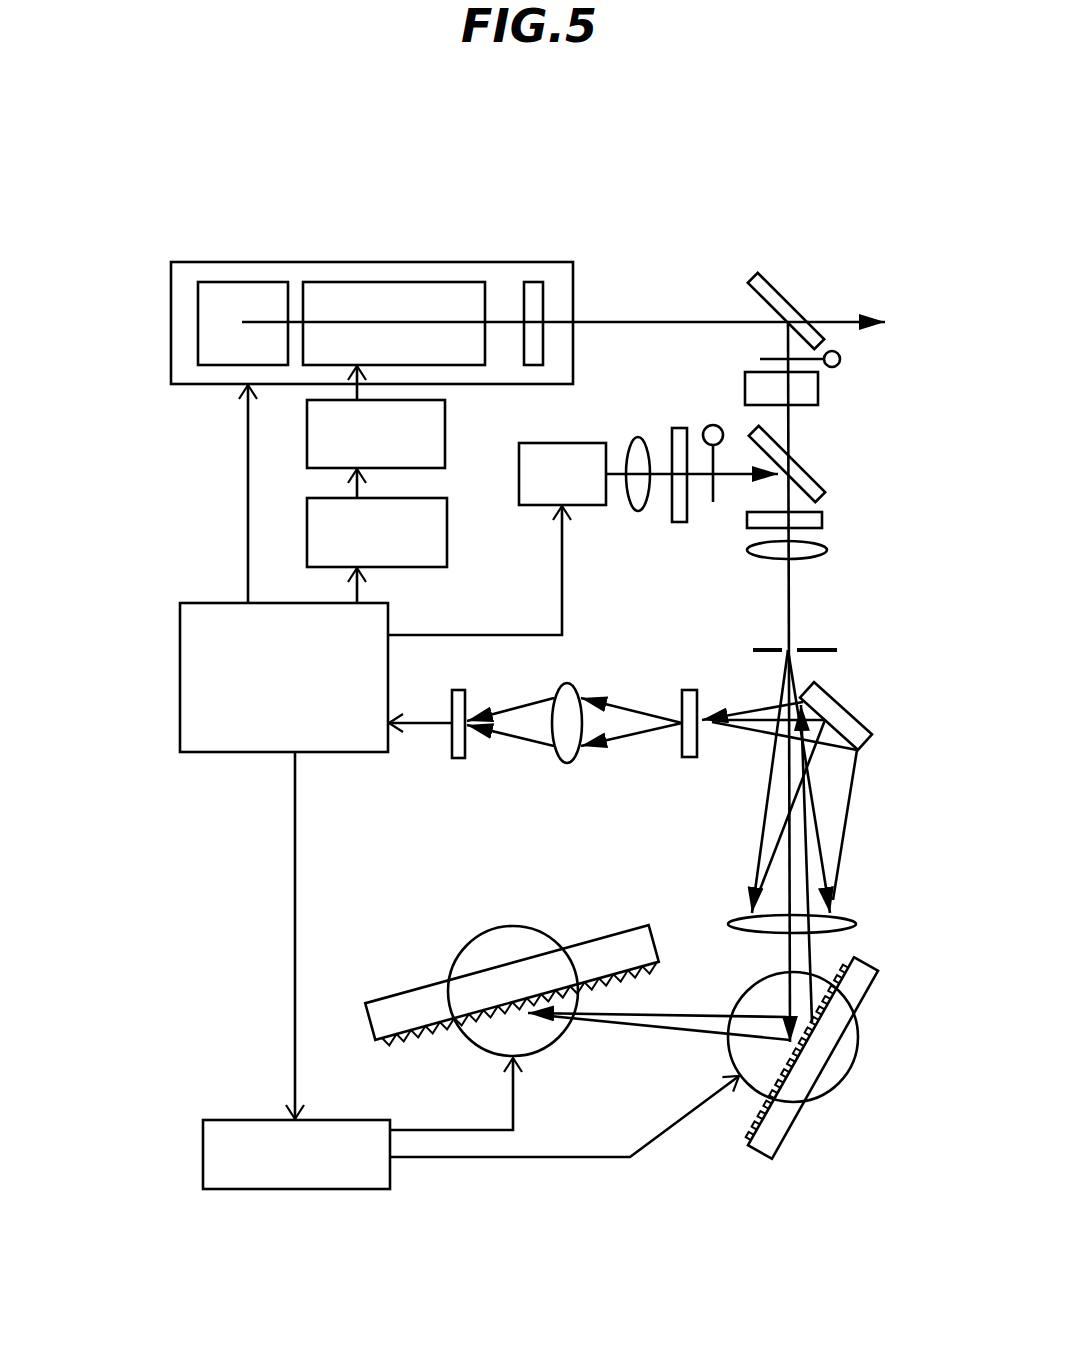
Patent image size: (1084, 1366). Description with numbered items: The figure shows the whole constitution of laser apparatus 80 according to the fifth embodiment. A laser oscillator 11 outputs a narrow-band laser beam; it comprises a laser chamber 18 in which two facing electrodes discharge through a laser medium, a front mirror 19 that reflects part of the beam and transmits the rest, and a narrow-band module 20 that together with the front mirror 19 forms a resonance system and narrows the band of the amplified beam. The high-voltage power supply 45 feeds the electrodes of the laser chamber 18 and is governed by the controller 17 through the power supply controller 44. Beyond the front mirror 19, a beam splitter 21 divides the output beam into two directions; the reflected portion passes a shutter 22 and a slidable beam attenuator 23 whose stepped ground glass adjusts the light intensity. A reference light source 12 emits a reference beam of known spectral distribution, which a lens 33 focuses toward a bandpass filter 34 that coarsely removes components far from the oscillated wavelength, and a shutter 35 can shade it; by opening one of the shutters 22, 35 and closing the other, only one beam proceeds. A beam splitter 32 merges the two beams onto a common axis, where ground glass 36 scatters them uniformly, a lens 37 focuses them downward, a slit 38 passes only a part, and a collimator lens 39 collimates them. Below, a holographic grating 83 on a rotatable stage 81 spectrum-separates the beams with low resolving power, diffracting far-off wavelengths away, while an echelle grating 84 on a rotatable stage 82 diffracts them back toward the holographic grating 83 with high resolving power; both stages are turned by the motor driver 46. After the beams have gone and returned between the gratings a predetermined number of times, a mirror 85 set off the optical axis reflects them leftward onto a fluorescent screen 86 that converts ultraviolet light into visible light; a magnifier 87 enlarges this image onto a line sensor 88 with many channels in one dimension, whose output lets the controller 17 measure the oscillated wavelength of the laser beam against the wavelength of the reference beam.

The laser apparatus 80 is at (517, 151).
The laser oscillator 11 is at (322, 262).
The narrow-band module 20 is at (240, 282).
The laser chamber 18 is at (460, 282).
The front mirror 19 is at (537, 282).
The beam splitter 21 is at (770, 278).
The shutter 22 is at (841, 359).
The beam attenuator 23 is at (818, 390).
The reference light source 12 is at (537, 505).
The lens 33 is at (637, 437).
The bandpass filter 34 is at (677, 427).
The shutter 35 is at (709, 425).
The beam splitter 32 is at (815, 477).
The ground glass 36 is at (822, 520).
The lens 37 is at (827, 553).
The slit 38 is at (825, 645).
The mirror 85 is at (870, 722).
The collimator lens 39 is at (843, 917).
The fluorescent screen 86 is at (688, 690).
The magnifier 87 is at (570, 690).
The line sensor 88 is at (455, 758).
The rotatable stage 82 is at (512, 925).
The echelle grating 84 is at (598, 935).
The rotatable stage 81 is at (858, 1045).
The holographic grating 83 is at (875, 985).
The high-voltage power supply 45 is at (307, 448).
The power supply controller 44 is at (307, 542).
The controller 17 is at (180, 673).
The motor driver 46 is at (323, 1189).